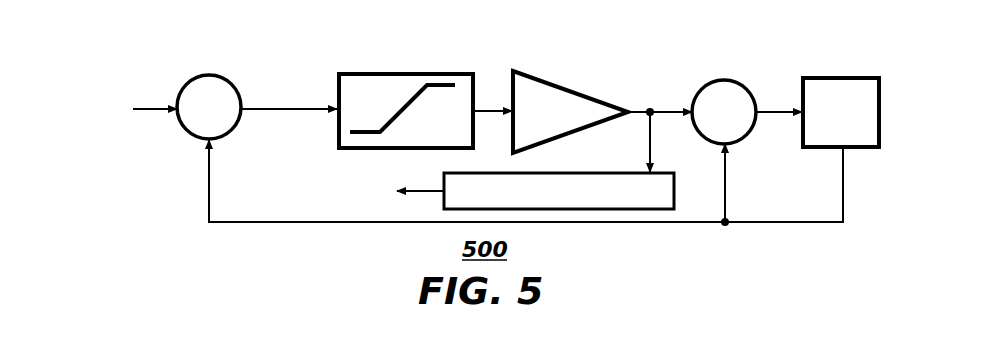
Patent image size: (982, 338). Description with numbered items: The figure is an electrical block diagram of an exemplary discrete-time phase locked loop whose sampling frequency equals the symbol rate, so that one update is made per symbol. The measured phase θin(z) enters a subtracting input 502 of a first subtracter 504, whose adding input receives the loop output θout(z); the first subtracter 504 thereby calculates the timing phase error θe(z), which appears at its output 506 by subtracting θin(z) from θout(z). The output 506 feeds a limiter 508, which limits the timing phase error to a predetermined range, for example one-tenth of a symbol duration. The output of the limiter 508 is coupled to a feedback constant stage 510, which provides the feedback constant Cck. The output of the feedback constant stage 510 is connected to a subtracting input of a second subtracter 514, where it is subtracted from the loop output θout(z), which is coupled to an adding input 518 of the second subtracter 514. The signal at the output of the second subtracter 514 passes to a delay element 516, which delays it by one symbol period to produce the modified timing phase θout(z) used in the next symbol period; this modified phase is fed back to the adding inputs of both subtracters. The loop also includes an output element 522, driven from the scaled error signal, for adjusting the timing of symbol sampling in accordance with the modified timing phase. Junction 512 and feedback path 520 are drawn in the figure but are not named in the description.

The subtracting input 502 is at (177, 100).
The first subtracter 504 is at (233, 82).
The output 506 is at (245, 100).
The limiter 508 is at (392, 72).
The feedback constant stage 510 is at (558, 82).
The output signal junction 512 is at (692, 103).
The second subtracter 514 is at (750, 88).
The delay element 516 is at (823, 77).
The adding input 518 is at (727, 145).
The feedback path theta_out(z) 520 is at (212, 220).
The output element 522 is at (207, 142).